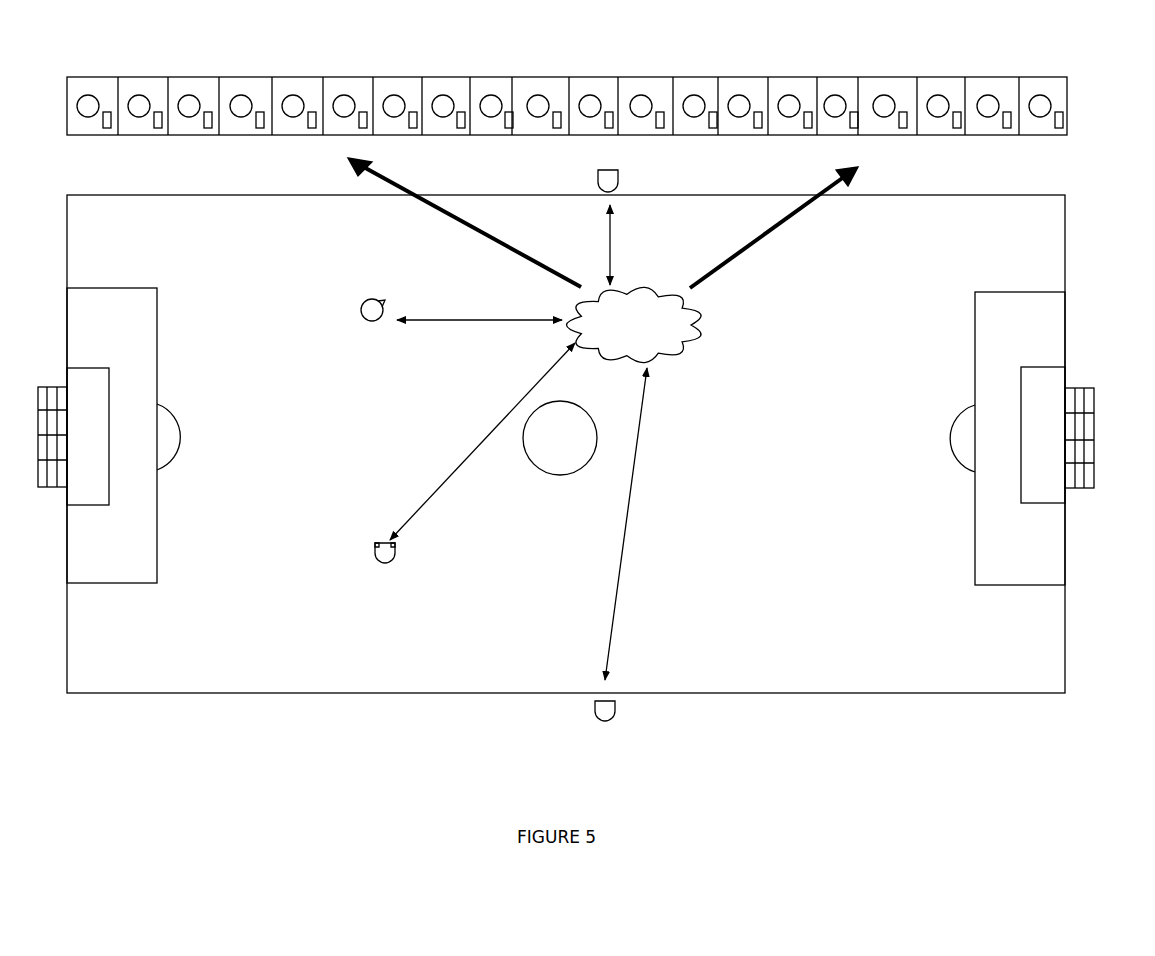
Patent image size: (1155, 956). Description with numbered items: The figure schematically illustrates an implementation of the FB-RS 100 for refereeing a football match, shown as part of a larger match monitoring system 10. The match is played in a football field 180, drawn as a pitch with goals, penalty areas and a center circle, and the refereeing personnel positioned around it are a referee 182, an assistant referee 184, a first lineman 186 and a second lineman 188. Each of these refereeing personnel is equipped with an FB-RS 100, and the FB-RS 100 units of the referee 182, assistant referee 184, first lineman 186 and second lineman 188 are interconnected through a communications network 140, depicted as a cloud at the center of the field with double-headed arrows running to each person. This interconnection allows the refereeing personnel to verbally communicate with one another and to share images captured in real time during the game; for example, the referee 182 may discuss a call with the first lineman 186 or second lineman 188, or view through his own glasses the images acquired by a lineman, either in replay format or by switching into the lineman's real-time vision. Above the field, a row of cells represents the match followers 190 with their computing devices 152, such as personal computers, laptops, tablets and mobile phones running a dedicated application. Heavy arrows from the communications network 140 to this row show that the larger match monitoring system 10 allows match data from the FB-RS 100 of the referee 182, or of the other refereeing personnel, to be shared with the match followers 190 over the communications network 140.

The match monitoring system 10 is at (567, 105).
The match followers 190 is at (290, 120).
The computing devices 152 is at (312, 130).
The football field 180 is at (566, 444).
The communications network 140 is at (689, 340).
The FB-RS 100 is at (495, 468).
The first lineman 186 is at (612, 168).
The assistant referee 184 is at (361, 312).
The referee 182 is at (373, 563).
The second lineman 188 is at (610, 722).